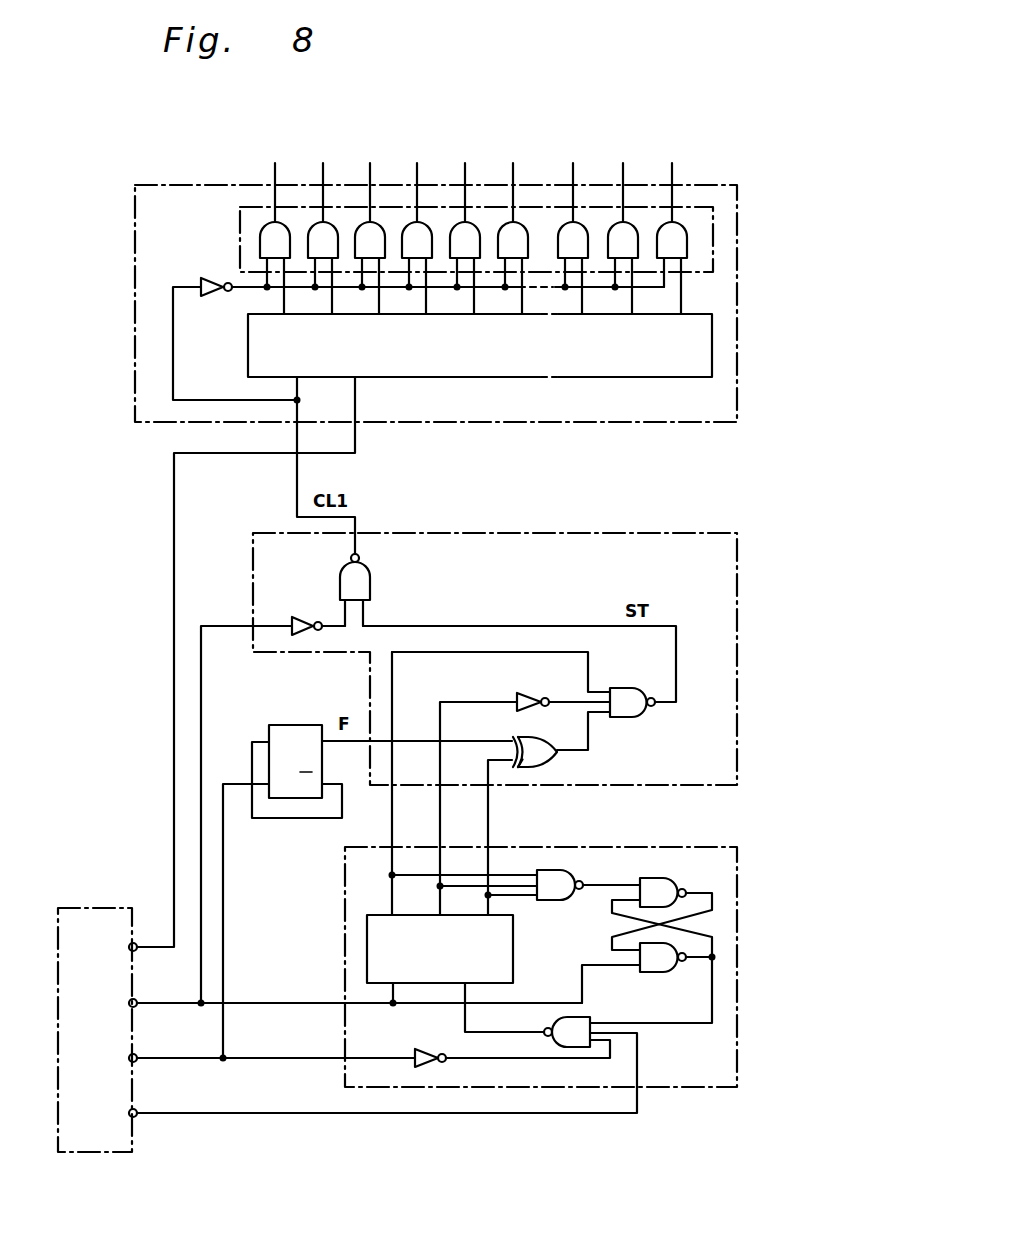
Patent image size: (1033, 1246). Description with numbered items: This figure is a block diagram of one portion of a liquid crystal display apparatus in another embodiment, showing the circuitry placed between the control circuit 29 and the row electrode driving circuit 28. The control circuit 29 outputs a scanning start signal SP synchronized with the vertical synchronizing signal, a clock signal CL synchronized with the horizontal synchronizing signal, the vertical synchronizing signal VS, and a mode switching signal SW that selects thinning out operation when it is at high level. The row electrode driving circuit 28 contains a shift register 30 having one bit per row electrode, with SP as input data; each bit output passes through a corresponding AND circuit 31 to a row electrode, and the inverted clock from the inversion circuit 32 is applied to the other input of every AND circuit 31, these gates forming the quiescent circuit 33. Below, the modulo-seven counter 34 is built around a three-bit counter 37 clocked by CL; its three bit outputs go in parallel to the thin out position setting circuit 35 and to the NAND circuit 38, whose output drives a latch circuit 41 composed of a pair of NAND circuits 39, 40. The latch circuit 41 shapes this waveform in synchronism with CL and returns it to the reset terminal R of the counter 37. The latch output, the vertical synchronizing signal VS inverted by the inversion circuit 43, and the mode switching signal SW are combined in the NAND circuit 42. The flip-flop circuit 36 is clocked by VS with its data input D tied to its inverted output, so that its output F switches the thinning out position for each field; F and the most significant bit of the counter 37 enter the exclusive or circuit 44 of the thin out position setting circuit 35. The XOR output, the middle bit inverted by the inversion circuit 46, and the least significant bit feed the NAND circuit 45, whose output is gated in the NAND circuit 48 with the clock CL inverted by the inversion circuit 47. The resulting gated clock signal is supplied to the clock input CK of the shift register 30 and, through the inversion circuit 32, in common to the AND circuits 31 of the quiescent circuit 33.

The row electrode driving circuit 28 is at (396, 424).
The control circuit 29 is at (86, 908).
The shift register 30 is at (465, 365).
The AND circuit 31 is at (262, 240).
The inversion circuit 32 is at (211, 298).
The quiescent circuit 33 is at (713, 202).
The modulo-seven counter 34 is at (500, 1090).
The thin out position setting circuit 35 is at (440, 533).
The flip-flop circuit 36 is at (290, 728).
The counter 37 is at (500, 950).
The NAND circuit 38 is at (552, 880).
The NAND circuit 39 is at (655, 890).
The NAND circuit 40 is at (665, 962).
The latch circuit 41 is at (714, 908).
The NAND circuit 42 is at (580, 1025).
The inversion circuit 43 is at (427, 1049).
The exclusive or circuit 44 is at (540, 756).
The NAND circuit 45 is at (633, 697).
The inversion circuit 46 is at (524, 695).
The inversion circuit 47 is at (295, 616).
The NAND circuit 48 is at (362, 580).